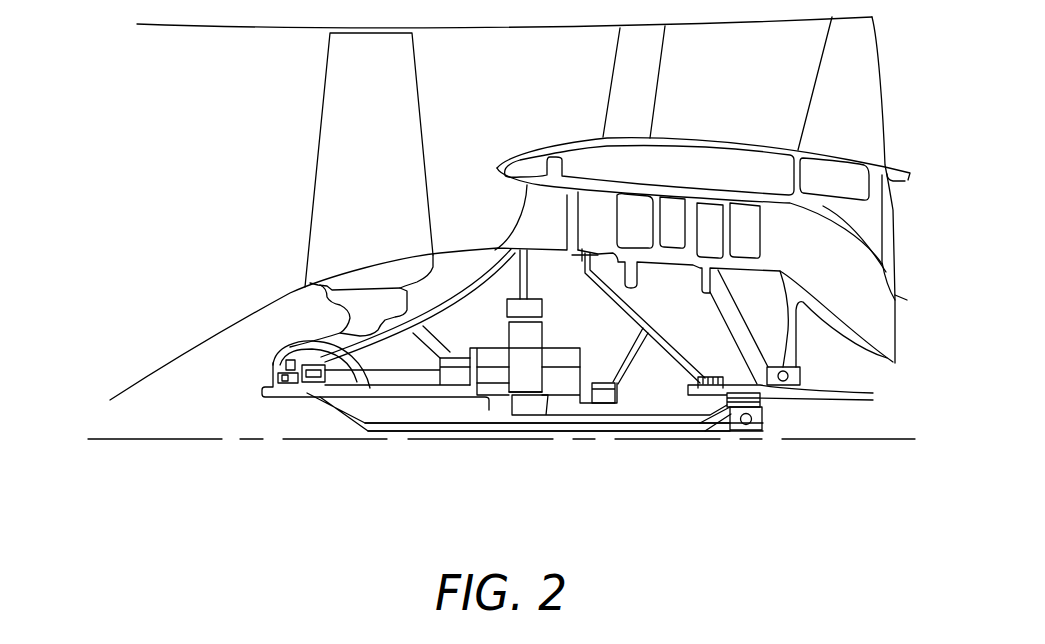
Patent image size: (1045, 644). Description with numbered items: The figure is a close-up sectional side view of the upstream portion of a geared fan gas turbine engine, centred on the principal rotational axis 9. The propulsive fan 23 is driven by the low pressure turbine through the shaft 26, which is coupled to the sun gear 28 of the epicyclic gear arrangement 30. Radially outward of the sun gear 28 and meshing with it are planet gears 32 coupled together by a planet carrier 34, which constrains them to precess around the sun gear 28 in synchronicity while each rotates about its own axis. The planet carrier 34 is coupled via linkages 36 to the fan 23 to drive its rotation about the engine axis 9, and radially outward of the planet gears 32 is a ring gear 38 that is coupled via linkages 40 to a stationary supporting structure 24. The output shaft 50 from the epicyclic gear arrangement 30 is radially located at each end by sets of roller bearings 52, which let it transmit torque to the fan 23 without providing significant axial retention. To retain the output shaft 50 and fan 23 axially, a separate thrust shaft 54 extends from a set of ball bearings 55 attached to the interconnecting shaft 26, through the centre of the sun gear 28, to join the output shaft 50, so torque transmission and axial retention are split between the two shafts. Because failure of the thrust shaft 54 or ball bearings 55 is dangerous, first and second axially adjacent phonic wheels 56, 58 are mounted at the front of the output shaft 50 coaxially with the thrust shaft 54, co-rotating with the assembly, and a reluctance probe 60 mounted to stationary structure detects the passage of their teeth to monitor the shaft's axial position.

The principal rotational axis 9 is at (200, 440).
The propulsive fan 23 is at (345, 158).
The stationary supporting structure 24 is at (527, 217).
The shaft 26 is at (652, 420).
The sun gear 28 is at (528, 408).
The epicyclic gear arrangement 30 is at (495, 390).
The planet gears 32 is at (503, 398).
The planet carrier 34 is at (570, 385).
The linkages 36 is at (483, 387).
The ring gear 38 is at (530, 310).
The linkages 40 is at (532, 280).
The output shaft 50 is at (283, 336).
The roller bearings 52 is at (445, 372).
The thrust shaft 54 is at (405, 430).
The ball bearings 55 is at (727, 403).
The first phonic wheel 56 is at (278, 375).
The second phonic wheel 58 is at (287, 393).
The reluctance probe 60 is at (283, 362).